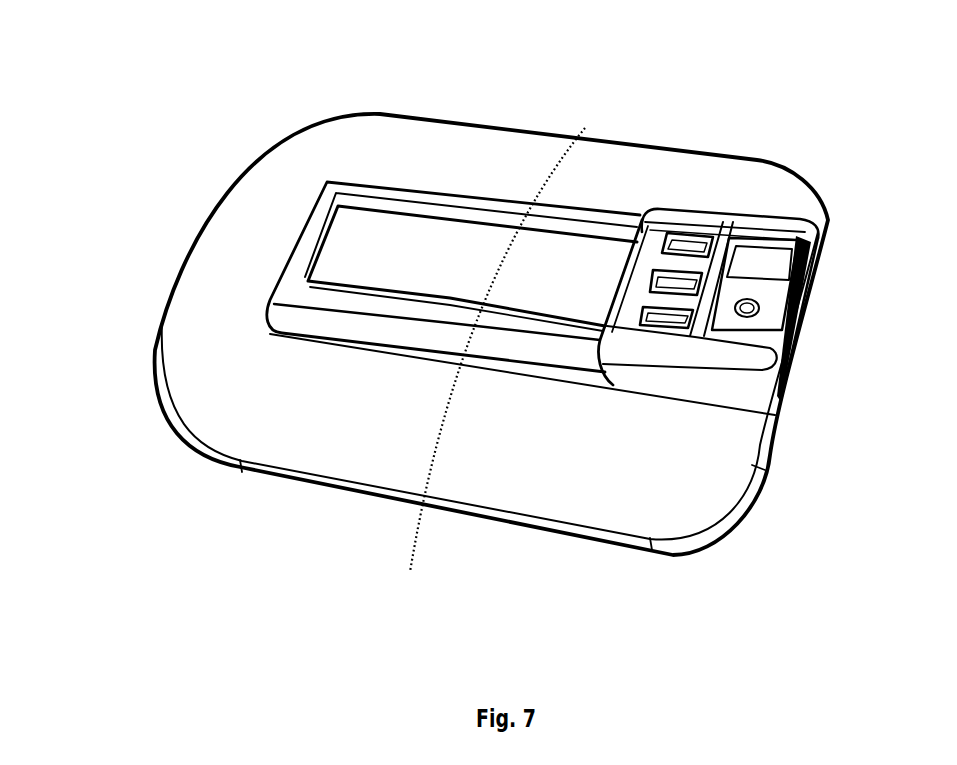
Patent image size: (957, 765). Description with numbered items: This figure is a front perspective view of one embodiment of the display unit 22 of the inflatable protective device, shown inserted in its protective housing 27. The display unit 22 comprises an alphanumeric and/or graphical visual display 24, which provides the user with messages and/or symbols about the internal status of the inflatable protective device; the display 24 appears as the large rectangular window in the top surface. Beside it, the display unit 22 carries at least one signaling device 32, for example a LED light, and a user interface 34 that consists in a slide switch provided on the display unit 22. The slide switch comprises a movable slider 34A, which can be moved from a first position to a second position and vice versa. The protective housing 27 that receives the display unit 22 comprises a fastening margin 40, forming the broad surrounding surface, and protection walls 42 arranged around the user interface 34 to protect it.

The display unit 22 is at (132, 122).
The alphanumeric and/or graphical visual display 24 is at (487, 243).
The protective housing 27 is at (153, 352).
The signaling device 32 is at (683, 238).
The user interface 34 is at (773, 318).
The movable slider 34A is at (760, 277).
The fastening margin 40 is at (580, 500).
The protection walls 42 is at (760, 213).